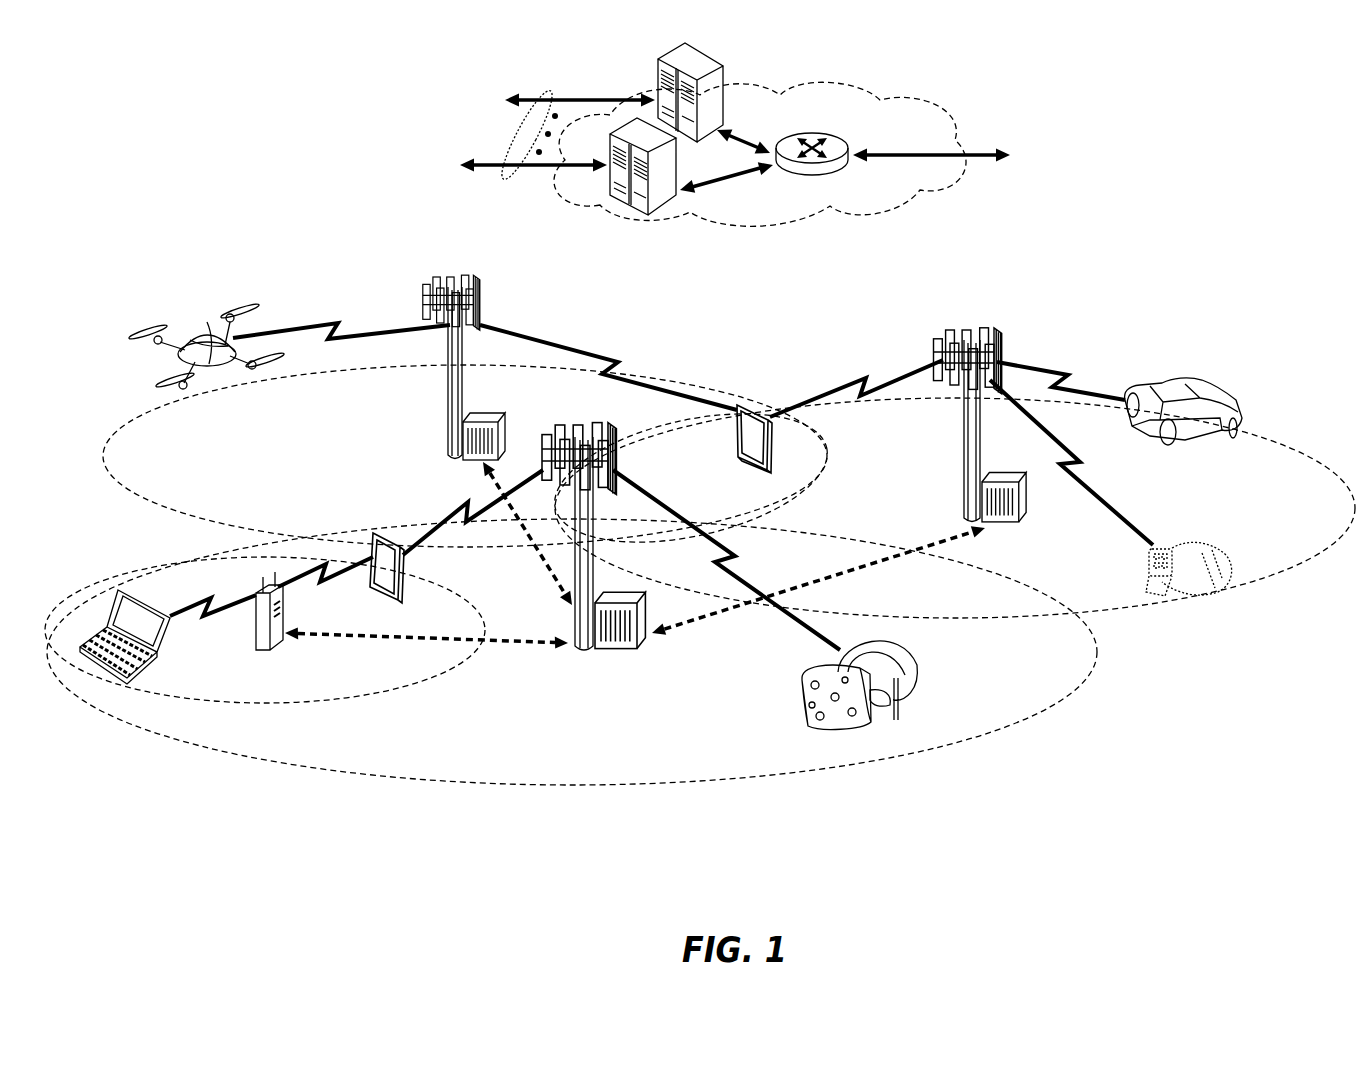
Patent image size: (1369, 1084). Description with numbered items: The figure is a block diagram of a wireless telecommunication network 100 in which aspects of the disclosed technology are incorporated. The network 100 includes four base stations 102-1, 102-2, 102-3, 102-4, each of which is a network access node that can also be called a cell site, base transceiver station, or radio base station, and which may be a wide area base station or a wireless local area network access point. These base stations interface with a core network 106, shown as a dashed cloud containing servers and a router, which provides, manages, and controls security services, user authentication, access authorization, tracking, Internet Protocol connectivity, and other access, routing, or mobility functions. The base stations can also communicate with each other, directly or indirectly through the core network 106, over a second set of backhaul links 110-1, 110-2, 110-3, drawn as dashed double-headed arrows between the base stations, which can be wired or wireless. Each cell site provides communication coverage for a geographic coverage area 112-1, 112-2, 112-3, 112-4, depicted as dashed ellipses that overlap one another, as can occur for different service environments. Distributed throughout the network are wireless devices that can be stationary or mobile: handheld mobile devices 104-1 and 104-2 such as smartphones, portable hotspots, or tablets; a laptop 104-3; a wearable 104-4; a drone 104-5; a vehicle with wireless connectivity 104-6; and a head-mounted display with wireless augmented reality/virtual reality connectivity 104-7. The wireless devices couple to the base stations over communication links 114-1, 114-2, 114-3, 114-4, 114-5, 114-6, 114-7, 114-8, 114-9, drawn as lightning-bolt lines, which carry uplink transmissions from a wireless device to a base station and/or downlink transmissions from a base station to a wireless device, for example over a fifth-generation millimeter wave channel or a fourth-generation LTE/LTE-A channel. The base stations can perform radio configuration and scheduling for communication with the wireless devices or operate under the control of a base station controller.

The wireless telecommunication network 100 is at (1258, 142).
The core network 106 is at (843, 222).
The base station 102-1 is at (580, 653).
The base station 102-2 is at (447, 405).
The base station 102-3 is at (965, 440).
The base station 102-4 is at (253, 642).
The handheld mobile device 104-1 is at (407, 577).
The handheld mobile device 104-2 is at (735, 440).
The laptop 104-3 is at (103, 677).
The wearable 104-4 is at (1165, 545).
The drone 104-5 is at (215, 375).
The vehicle with wireless connectivity 104-6 is at (1208, 395).
The head-mounted display with wireless AR/VR connectivity 104-7 is at (918, 663).
The backhaul link 110-1 is at (323, 635).
The backhaul link 110-2 is at (885, 563).
The backhaul link 110-3 is at (542, 560).
The geographic coverage area 112-1 is at (510, 785).
The geographic coverage area 112-2 is at (387, 692).
The geographic coverage area 112-3 is at (165, 505).
The geographic coverage area 112-4 is at (1262, 443).
The communication link 114-1 is at (738, 565).
The communication link 114-2 is at (463, 512).
The communication link 114-3 is at (185, 612).
The communication link 114-4 is at (330, 580).
The communication link 114-5 is at (330, 328).
The communication link 114-6 is at (610, 365).
The communication link 114-7 is at (858, 385).
The communication link 114-8 is at (1090, 480).
The communication link 114-9 is at (1058, 383).